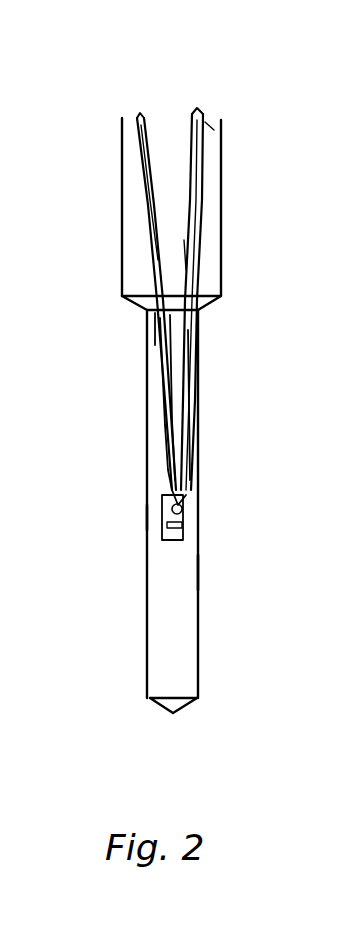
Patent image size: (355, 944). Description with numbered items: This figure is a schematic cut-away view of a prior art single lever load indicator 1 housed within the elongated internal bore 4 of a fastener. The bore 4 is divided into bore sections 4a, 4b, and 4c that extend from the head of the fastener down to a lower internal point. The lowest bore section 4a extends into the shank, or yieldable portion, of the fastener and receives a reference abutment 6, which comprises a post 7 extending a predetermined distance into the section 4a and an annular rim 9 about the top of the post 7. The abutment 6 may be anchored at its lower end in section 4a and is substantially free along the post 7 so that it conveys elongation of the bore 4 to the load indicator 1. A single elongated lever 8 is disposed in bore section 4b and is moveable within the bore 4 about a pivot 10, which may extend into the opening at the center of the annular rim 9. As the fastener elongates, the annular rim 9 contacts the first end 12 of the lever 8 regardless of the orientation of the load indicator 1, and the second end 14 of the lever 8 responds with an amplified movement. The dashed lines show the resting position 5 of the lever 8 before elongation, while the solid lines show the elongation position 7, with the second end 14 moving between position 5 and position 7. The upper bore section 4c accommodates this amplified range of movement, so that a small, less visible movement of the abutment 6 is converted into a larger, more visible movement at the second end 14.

The single lever load indicator 1 is at (173, 76).
The elongated internal bore 4 is at (138, 415).
The bore section 4a is at (148, 578).
The bore section 4b is at (150, 427).
The bore section 4c is at (122, 217).
The resting position 5 is at (140, 113).
The reference abutment 6 is at (198, 571).
The elongation position 7 is at (200, 108).
The single elongated lever 8 is at (190, 250).
The annular rim 9 is at (150, 517).
The pivot 10 is at (195, 513).
The first end 12 is at (186, 505).
The second end 14 is at (207, 122).